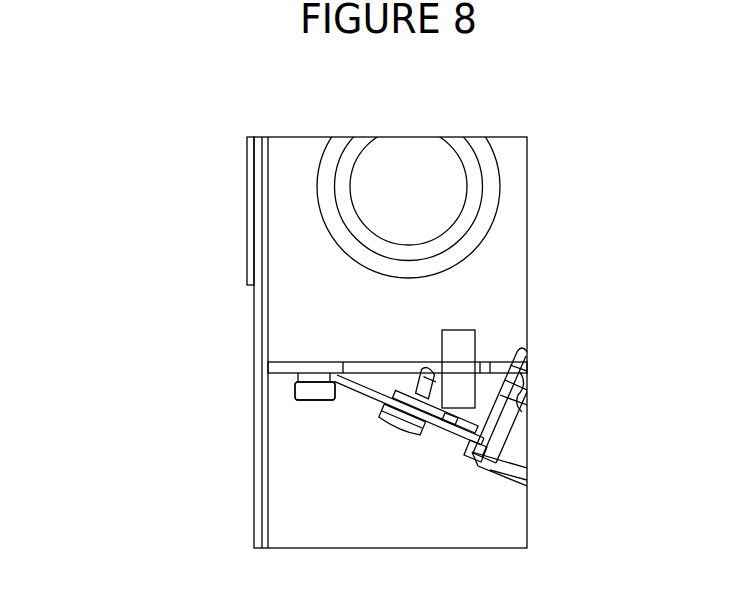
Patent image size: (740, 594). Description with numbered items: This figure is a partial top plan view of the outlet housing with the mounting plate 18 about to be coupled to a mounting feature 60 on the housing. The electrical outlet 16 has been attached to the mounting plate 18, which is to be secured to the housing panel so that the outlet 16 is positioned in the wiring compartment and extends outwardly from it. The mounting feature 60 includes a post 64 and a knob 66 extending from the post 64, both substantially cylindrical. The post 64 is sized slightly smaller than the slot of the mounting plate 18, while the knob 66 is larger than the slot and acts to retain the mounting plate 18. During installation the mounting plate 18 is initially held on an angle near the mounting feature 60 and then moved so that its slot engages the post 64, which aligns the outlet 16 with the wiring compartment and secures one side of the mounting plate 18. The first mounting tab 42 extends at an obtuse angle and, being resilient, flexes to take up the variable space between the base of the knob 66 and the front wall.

The electrical outlet 16 is at (522, 416).
The mounting plate 18 is at (455, 447).
The first mounting tab 42 is at (362, 387).
The mounting feature 60 is at (294, 392).
The post 64 is at (292, 371).
The knob 66 is at (292, 395).